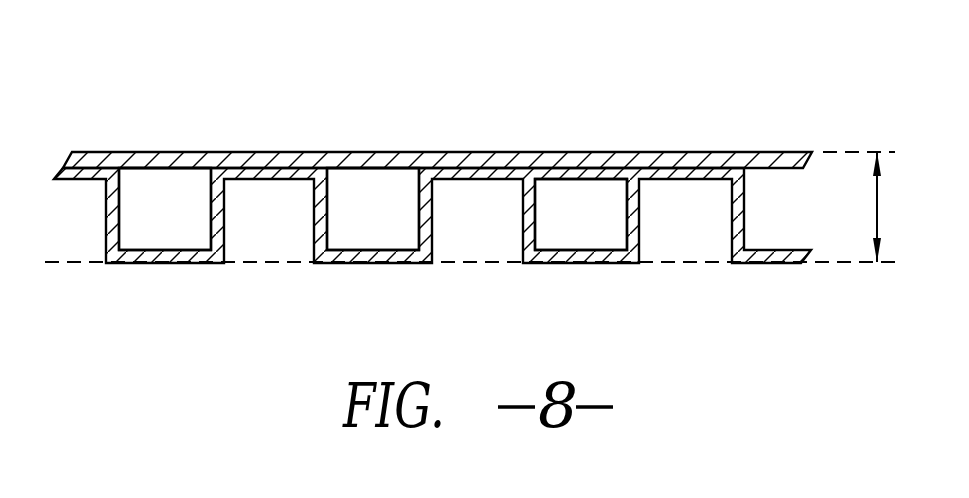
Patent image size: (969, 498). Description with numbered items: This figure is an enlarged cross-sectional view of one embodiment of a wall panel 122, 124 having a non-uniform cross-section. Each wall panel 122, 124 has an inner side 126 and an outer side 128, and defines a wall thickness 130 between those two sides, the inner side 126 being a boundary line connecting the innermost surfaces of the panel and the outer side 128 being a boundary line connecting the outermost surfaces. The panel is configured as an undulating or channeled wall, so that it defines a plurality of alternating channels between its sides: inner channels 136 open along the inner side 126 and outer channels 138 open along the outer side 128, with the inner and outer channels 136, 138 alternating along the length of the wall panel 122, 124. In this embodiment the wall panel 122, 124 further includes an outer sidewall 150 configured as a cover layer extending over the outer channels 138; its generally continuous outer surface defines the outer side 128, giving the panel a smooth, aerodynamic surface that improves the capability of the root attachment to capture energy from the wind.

The wall panel 122 is at (479, 187).
The wall panel 124 is at (162, 95).
The inner side 126 is at (256, 263).
The outer side 128 is at (485, 152).
The wall thickness 130 is at (877, 217).
The inner channels 136 is at (285, 237).
The outer channels 138 is at (175, 187).
The outer sidewall 150 is at (783, 162).